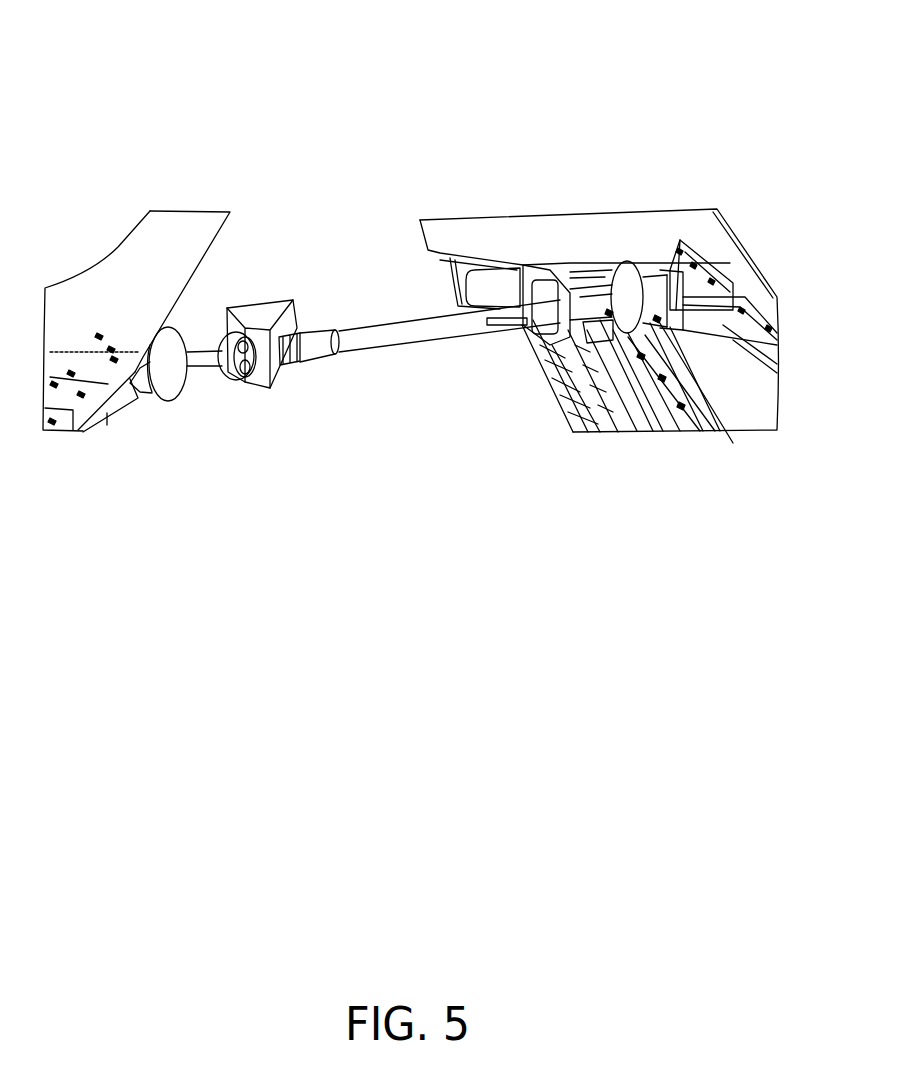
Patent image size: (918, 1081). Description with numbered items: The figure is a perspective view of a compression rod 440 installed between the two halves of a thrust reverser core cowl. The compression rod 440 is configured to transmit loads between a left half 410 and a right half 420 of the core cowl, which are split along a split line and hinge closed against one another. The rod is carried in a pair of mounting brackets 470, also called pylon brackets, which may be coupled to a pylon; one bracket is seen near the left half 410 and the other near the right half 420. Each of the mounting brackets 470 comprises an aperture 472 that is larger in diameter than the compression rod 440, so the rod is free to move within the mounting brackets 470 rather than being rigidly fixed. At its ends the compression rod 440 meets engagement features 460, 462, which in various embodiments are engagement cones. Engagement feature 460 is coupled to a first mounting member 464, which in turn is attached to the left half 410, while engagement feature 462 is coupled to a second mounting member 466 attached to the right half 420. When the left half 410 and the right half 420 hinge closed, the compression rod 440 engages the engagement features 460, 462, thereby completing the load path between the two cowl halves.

The left half 410 is at (187, 213).
The right half 420 is at (677, 212).
The compression rod 440 is at (394, 322).
The engagement feature 460 is at (157, 400).
The engagement feature 462 is at (733, 443).
The first mounting member 464 is at (107, 416).
The second mounting member 466 is at (723, 324).
The mounting bracket 470 is at (289, 300).
The aperture 472 is at (243, 387).